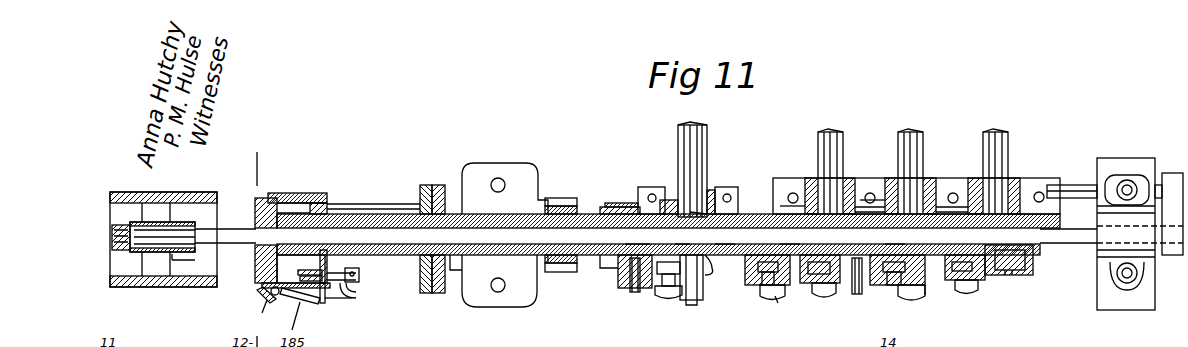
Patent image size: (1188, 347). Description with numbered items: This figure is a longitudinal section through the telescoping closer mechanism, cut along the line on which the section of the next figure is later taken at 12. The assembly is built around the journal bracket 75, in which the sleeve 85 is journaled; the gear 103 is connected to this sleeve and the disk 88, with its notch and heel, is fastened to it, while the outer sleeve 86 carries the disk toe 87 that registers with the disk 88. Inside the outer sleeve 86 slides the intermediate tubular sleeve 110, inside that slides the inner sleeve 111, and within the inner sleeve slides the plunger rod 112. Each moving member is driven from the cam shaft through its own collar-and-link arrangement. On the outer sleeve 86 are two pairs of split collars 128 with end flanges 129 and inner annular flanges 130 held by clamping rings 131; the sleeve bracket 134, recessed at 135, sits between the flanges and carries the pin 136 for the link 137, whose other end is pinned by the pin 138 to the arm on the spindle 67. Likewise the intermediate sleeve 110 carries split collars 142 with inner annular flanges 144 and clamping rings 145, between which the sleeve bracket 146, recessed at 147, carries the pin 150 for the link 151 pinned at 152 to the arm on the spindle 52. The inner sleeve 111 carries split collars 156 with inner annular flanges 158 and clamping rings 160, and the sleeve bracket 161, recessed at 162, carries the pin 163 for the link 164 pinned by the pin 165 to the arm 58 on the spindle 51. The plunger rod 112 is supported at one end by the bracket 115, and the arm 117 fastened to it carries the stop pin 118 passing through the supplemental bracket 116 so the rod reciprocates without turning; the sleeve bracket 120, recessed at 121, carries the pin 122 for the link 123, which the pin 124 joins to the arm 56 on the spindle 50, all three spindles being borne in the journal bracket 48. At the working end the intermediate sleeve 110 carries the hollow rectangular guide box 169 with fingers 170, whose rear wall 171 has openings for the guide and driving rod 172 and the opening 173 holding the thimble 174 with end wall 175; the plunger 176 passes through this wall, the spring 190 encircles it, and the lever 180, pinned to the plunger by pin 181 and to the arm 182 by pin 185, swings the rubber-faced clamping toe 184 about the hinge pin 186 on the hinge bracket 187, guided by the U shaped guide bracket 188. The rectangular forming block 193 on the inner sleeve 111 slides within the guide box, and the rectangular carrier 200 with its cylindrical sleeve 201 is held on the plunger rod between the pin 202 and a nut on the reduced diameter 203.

The section line 12 is at (257, 178).
The journal bracket 48 is at (968, 178).
The spindle 50 is at (1008, 152).
The spindle 51 is at (923, 150).
The spindle 52 is at (848, 146).
The arm 56 is at (958, 272).
The arm 58 is at (926, 290).
The spindle 67 is at (716, 148).
The journal bracket 75 is at (536, 296).
The sleeve 85 is at (527, 256).
The outer sleeve 86 is at (510, 212).
The disk toe 87 is at (425, 184).
The disk 88 is at (438, 184).
The gear 103 is at (566, 198).
The intermediate tubular sleeve 110 is at (608, 262).
The inner sleeve 111 is at (678, 228).
The plunger rod 112 is at (1070, 228).
The bracket 115 is at (1118, 158).
The supplemental bracket 116 is at (1138, 175).
The arm 117 is at (1172, 256).
The stop pin 118 is at (1076, 185).
The sleeve bracket 120 is at (1033, 255).
The recess 121 is at (1033, 268).
The pin 122 is at (1020, 275).
The link 123 is at (958, 262).
The pin 124 is at (968, 292).
The split collars 128 is at (604, 209).
The end flanges 129 is at (616, 203).
The inner annular flanges 130 is at (625, 245).
The clamping rings 131 is at (702, 210).
The sleeve bracket 134 is at (636, 187).
The recess 135 is at (620, 282).
The pin 136 is at (665, 300).
The link 137 is at (633, 292).
The pin 138 is at (690, 305).
The split collars 142 is at (713, 265).
The inner annular flanges 144 is at (716, 228).
The clamping rings 145 is at (806, 206).
The sleeve bracket 146 is at (745, 275).
The recess 147 is at (765, 298).
The pin 150 is at (760, 285).
The link 151 is at (808, 266).
The pin 152 is at (777, 298).
The split collars 156 is at (818, 228).
The inner annular flanges 158 is at (893, 228).
The clamping rings 160 is at (842, 208).
The sleeve bracket 161 is at (880, 200).
The recess 162 is at (820, 301).
The pin 163 is at (858, 294).
The link 164 is at (905, 268).
The pin 165 is at (911, 300).
The hollow rectangular guide box 169 is at (310, 194).
The fingers 170 is at (262, 285).
The rear wall 171 is at (330, 203).
The guide and driving rod 172 is at (404, 208).
The opening 173 is at (322, 224).
The thimble 174 is at (308, 270).
The end wall 175 is at (300, 300).
The plunger 176 is at (327, 270).
The lever 180 is at (343, 289).
The pin 181 is at (372, 266).
The arm 182 is at (277, 296).
The rubber facing 184 is at (258, 291).
The pin 185 is at (262, 313).
The hinge pin 186 is at (256, 268).
The hinge bracket 187 is at (323, 303).
The U shaped guide bracket 188 is at (340, 300).
The spring 190 is at (356, 291).
The rectangular forming block 193 is at (255, 212).
The rectangular carrier 200 is at (172, 191).
The cylindrical sleeve 201 is at (172, 254).
The pin 202 is at (185, 225).
The reduced diameter 203 is at (122, 251).